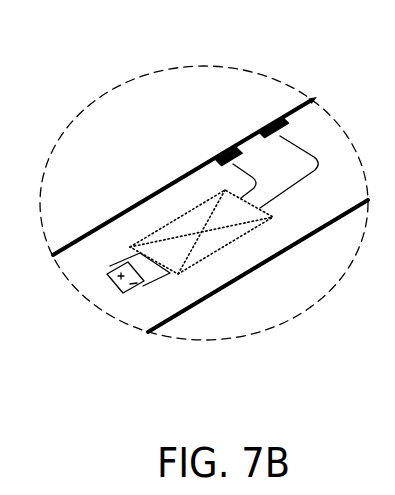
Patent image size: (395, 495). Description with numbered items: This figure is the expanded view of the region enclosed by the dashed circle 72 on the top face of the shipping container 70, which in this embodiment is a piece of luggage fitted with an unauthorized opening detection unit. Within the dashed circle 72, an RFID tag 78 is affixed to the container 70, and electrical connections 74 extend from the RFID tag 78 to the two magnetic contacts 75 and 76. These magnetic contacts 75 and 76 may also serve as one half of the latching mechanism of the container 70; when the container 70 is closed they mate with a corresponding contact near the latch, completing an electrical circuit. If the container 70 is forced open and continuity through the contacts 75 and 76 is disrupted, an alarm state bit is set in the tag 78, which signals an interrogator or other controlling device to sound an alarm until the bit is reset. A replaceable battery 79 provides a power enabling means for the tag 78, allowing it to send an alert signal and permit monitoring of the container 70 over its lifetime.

The shipping container 70 is at (292, 295).
The dashed circle 72 is at (237, 70).
The electrical connections 74 is at (248, 182).
The magnetic contact 75 is at (222, 162).
The magnetic contact 76 is at (270, 121).
The RFID tag 78 is at (158, 229).
The replaceable battery 79 is at (127, 289).